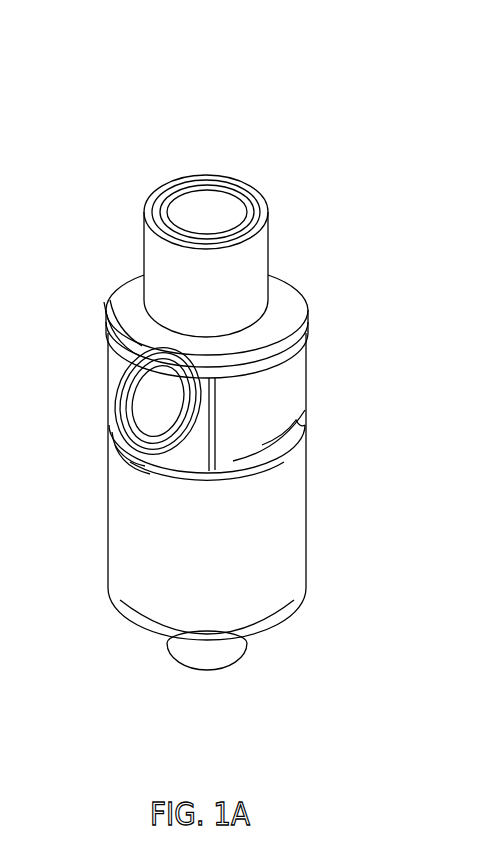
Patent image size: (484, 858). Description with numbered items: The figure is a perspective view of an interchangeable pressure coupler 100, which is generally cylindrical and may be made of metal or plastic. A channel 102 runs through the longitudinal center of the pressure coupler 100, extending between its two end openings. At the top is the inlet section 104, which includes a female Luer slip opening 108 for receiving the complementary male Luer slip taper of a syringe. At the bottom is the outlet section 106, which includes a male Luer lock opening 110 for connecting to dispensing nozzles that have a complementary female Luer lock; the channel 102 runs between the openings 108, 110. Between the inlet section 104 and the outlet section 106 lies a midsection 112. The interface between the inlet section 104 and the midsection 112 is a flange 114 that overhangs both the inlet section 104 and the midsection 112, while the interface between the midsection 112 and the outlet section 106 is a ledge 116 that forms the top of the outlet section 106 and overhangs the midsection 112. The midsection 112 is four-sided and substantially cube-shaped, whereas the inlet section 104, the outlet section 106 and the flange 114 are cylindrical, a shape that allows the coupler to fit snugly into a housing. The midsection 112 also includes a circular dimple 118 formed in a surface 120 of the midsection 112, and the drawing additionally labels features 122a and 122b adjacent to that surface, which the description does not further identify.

The interchangeable pressure coupler 100 is at (209, 124).
The channel 102 is at (221, 201).
The inlet section 104 is at (143, 243).
The outlet section 106 is at (307, 512).
The female Luer slip opening 108 is at (186, 190).
The male Luer lock opening 110 is at (203, 670).
The midsection 112 is at (304, 382).
The flange 114 is at (287, 290).
The ledge 116 is at (291, 433).
The circular dimple 118 is at (137, 385).
The surface 120 is at (118, 407).
The first tab 122a is at (135, 468).
The second tab 122b is at (115, 315).